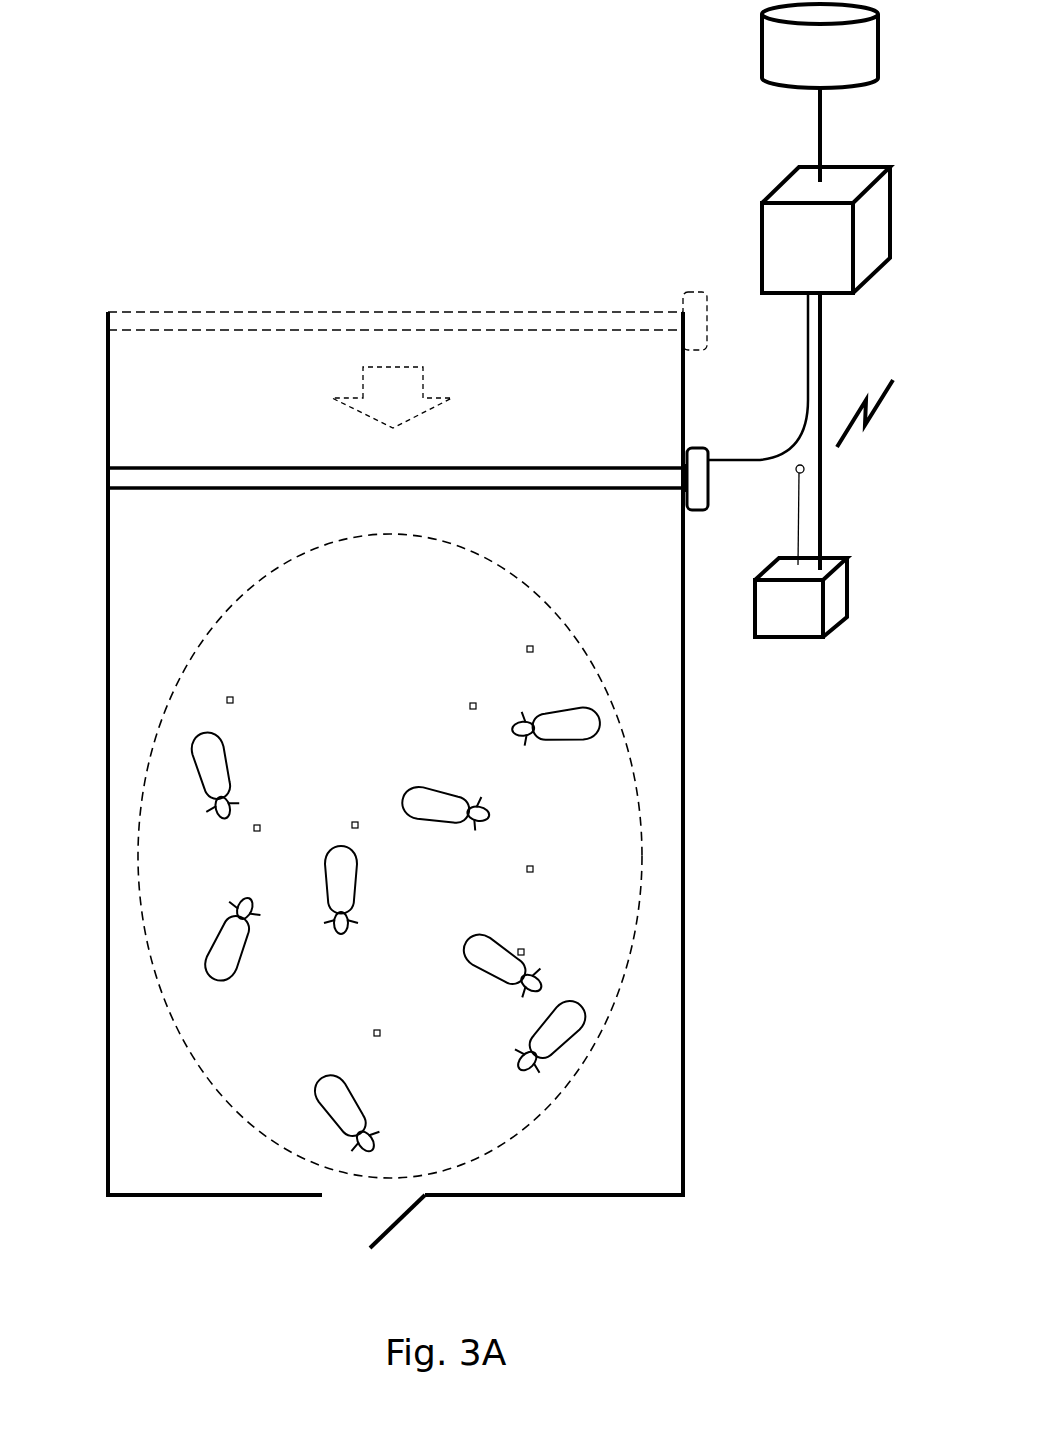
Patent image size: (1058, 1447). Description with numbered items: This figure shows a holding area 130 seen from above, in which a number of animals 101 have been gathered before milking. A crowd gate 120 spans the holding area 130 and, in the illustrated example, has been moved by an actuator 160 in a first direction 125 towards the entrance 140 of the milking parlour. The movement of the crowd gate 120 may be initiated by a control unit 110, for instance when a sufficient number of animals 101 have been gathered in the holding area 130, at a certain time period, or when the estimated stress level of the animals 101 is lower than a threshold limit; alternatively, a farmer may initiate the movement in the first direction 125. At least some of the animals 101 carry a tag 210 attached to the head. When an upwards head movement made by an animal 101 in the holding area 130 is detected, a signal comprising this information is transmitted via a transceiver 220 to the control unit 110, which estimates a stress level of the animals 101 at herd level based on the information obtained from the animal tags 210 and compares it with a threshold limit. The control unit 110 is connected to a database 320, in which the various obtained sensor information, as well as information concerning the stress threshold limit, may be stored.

The holding area 130 is at (107, 147).
The first direction 125 is at (388, 312).
The crowd gate 120 is at (128, 458).
The actuator 160 is at (696, 495).
The entrance 140 is at (400, 1221).
The animals 101 is at (605, 942).
The tag 210 is at (537, 868).
The control unit 110 is at (834, 256).
The transceiver 220 is at (814, 614).
The database 320 is at (758, 35).